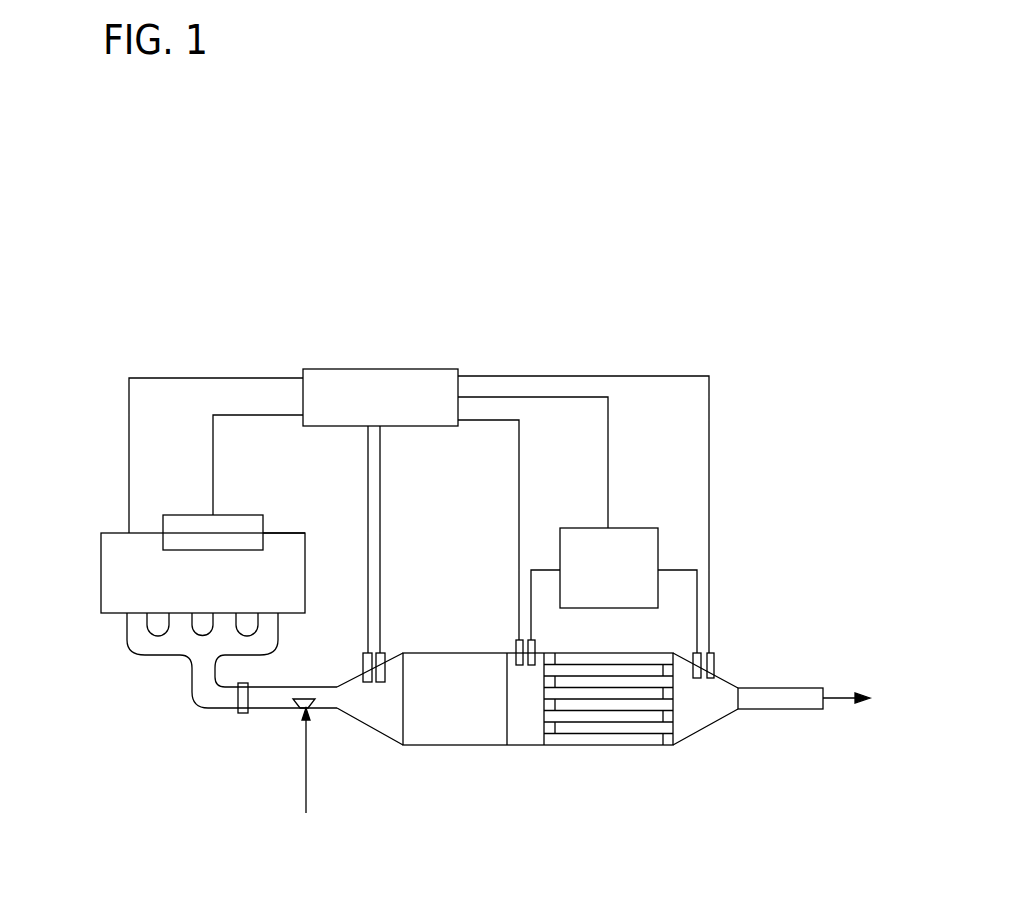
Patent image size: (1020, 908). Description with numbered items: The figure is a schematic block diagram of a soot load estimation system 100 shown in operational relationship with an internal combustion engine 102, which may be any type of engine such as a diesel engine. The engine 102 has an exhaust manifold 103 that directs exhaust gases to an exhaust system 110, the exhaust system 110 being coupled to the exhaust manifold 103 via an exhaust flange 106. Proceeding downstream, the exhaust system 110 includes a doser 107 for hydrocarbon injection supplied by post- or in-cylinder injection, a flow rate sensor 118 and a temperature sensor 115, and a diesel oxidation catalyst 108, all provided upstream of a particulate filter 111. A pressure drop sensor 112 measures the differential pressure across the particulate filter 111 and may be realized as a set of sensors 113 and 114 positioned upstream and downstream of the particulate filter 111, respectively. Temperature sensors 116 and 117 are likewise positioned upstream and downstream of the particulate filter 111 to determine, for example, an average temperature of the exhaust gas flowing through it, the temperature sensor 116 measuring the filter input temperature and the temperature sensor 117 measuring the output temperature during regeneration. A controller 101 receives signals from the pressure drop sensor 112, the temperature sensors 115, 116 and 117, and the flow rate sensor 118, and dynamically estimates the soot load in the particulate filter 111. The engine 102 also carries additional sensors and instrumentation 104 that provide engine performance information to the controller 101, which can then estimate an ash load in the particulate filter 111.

The soot load estimation system 100 is at (543, 223).
The controller 101 is at (400, 369).
The internal combustion engine 102 is at (115, 533).
The exhaust manifold 103 is at (200, 686).
The additional sensors and/or instrumentation 104 is at (228, 515).
The exhaust flange 106 is at (243, 722).
The doser 107 is at (297, 702).
The diesel oxidation catalyst 108 is at (488, 723).
The exhaust system 110 is at (603, 696).
The particulate filter 111 is at (648, 746).
The pressure drop sensor 112 is at (658, 541).
The upstream pressure sensor 113 is at (533, 667).
The downstream pressure sensor 114 is at (699, 678).
The temperature sensor 115 is at (386, 664).
The temperature sensor 116 is at (515, 650).
The temperature sensor 117 is at (714, 663).
The flow rate sensor 118 is at (363, 666).